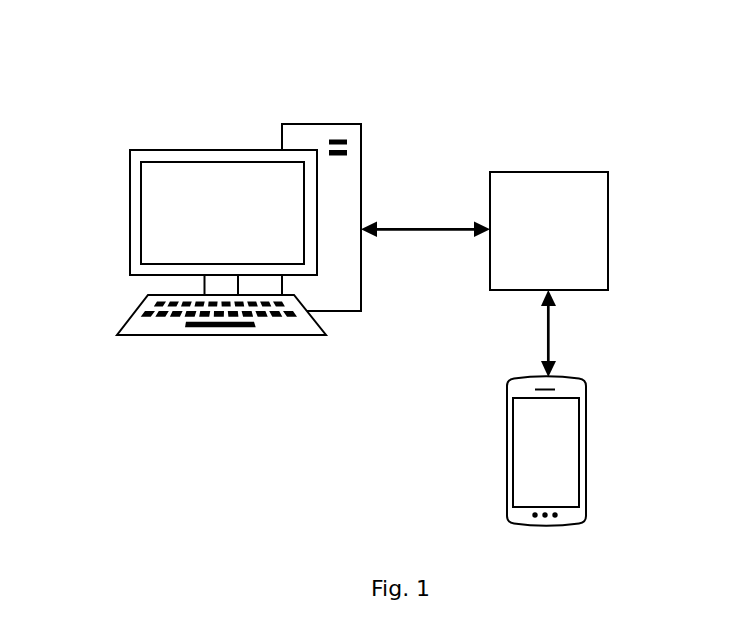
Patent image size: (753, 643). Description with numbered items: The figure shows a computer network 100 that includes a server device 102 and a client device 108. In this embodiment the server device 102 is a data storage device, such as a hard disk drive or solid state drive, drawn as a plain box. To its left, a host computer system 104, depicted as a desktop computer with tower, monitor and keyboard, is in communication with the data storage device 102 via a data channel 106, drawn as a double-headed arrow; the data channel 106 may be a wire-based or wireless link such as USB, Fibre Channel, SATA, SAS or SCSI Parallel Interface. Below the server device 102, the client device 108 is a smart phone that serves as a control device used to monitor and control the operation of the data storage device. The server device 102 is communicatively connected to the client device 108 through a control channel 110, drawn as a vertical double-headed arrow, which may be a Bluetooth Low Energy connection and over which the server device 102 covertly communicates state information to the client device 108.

The computer network 100 is at (124, 72).
The server device 102 is at (608, 197).
The host computer system 104 is at (361, 153).
The data channel 106 is at (392, 228).
The client device 108 is at (586, 421).
The control channel 110 is at (551, 352).